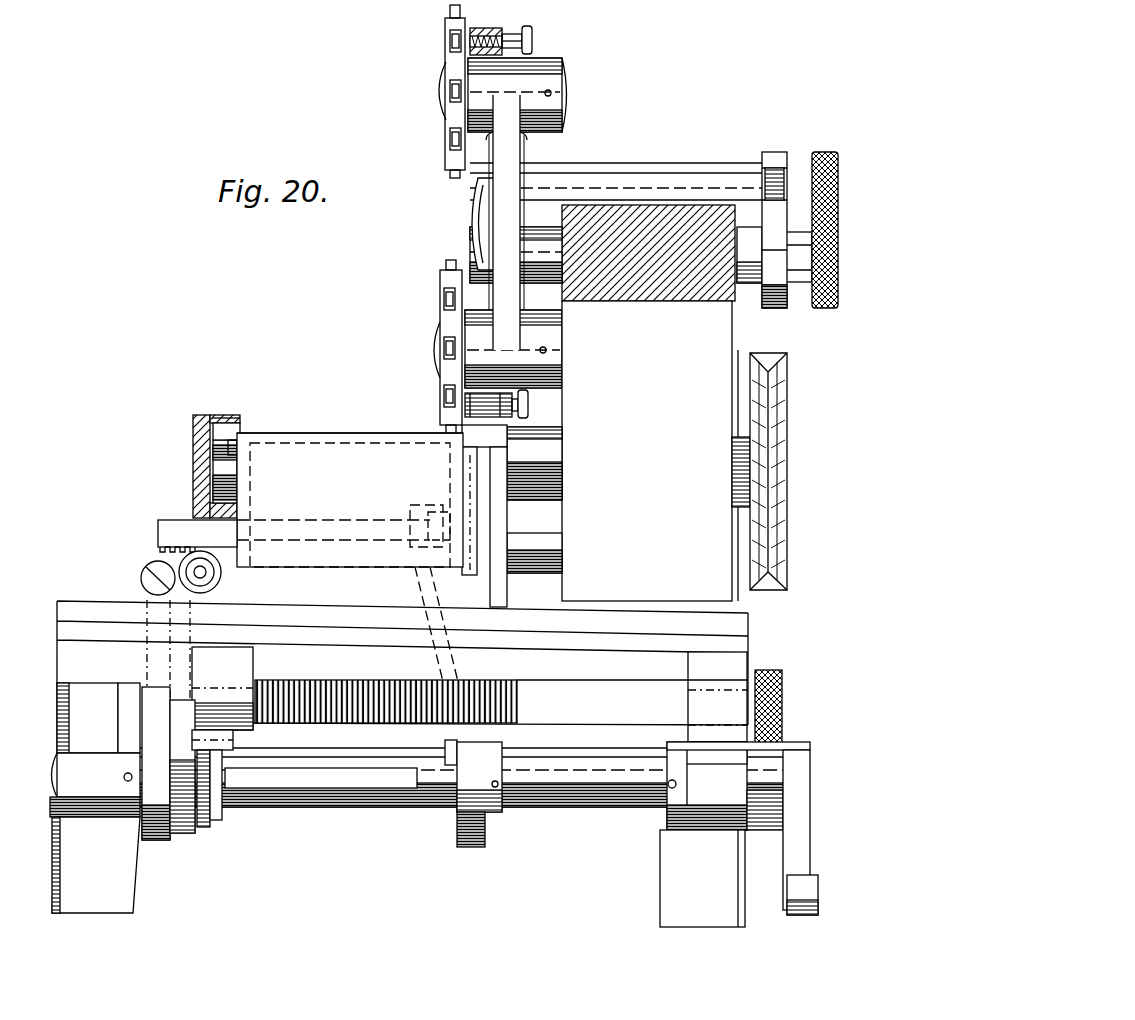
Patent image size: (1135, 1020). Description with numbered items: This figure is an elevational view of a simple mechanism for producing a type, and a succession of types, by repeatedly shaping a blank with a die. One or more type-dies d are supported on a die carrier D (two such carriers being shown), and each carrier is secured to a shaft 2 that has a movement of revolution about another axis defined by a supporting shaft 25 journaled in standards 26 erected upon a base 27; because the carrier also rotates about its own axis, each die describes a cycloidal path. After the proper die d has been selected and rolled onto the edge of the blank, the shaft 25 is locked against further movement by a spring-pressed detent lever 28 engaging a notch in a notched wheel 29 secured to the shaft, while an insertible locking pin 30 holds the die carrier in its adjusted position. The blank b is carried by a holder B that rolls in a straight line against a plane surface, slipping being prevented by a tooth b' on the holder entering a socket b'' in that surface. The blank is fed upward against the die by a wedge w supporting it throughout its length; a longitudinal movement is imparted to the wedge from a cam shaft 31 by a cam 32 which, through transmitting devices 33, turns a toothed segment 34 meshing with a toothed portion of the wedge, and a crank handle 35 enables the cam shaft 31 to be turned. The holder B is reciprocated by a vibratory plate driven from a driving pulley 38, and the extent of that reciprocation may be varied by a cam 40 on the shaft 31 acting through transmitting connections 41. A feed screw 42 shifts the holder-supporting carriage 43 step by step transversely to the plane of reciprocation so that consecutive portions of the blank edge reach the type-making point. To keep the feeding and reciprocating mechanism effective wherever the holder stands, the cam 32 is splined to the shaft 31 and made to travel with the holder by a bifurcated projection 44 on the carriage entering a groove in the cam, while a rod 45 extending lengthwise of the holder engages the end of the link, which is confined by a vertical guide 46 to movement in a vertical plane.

The shaft 2 is at (440, 84).
The die carrier D is at (445, 120).
The type-die d is at (449, 145).
The supporting shaft 25 is at (472, 224).
The standards 26 is at (650, 451).
The base 27 is at (402, 671).
The spring-pressed detent lever 28 is at (772, 178).
The notched wheel 29 is at (774, 308).
The insertible locking pin 30 is at (516, 34).
The cam shaft 31 is at (292, 808).
The cam 32 is at (172, 838).
The transmitting devices 33 is at (150, 598).
The toothed segment 34 is at (222, 578).
The crank handle 35 is at (796, 916).
The driving pulley 38 is at (778, 446).
The cam 40 is at (477, 816).
The transmitting connections 41 is at (445, 744).
The feed screw 42 is at (500, 702).
The holder-supporting carriage 43 is at (193, 478).
The bifurcated projection 44 is at (233, 743).
The rod 45 is at (326, 545).
The vertical guide 46 is at (416, 596).
The carrier or holder B is at (350, 500).
The blank b is at (350, 420).
The tooth b' is at (245, 426).
The socket b'' is at (244, 406).
The catch c is at (259, 425).
The wedge w is at (197, 536).